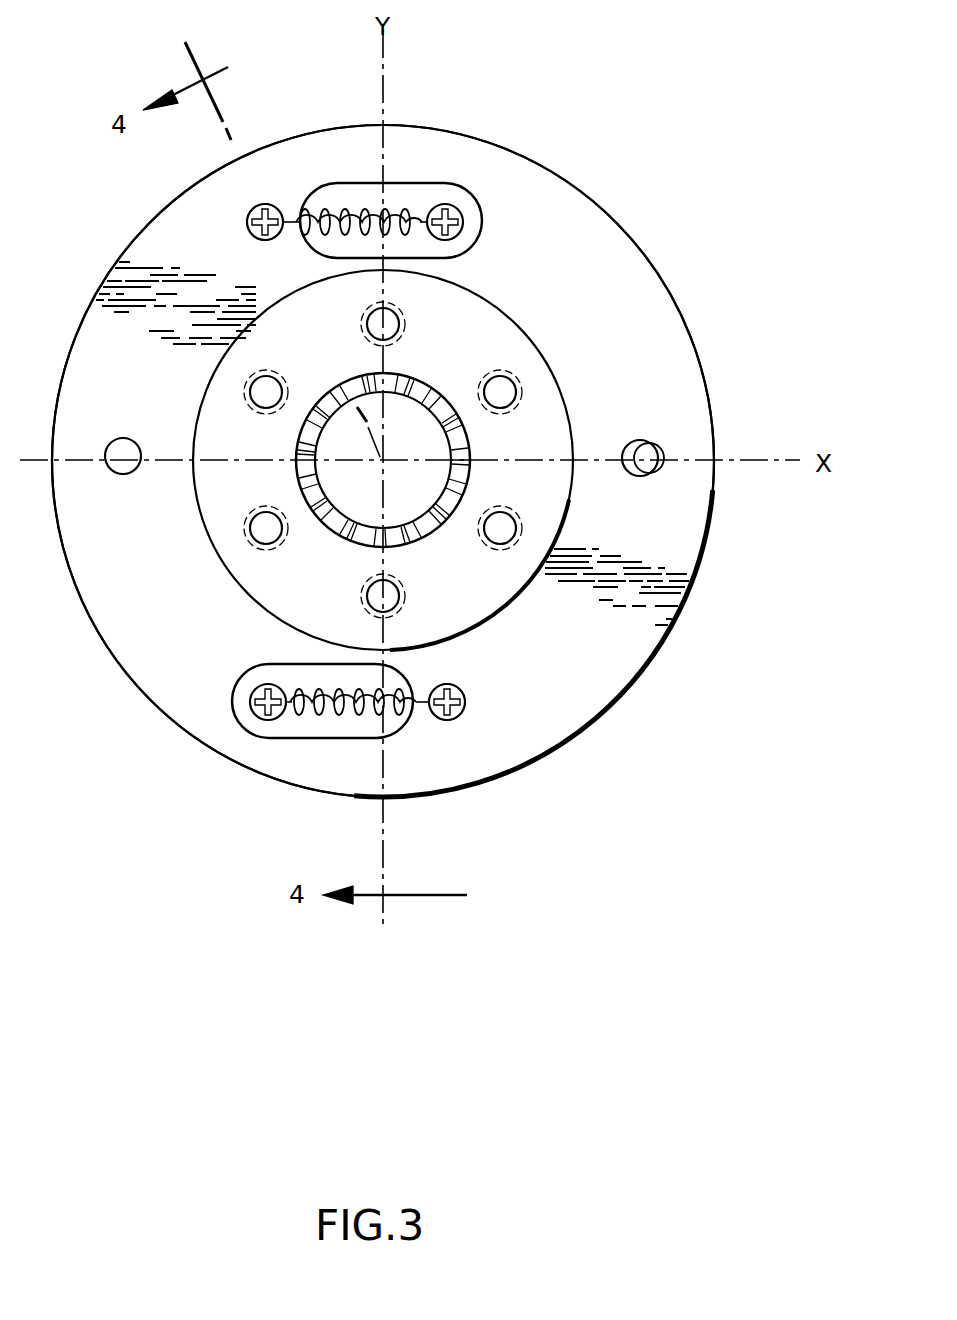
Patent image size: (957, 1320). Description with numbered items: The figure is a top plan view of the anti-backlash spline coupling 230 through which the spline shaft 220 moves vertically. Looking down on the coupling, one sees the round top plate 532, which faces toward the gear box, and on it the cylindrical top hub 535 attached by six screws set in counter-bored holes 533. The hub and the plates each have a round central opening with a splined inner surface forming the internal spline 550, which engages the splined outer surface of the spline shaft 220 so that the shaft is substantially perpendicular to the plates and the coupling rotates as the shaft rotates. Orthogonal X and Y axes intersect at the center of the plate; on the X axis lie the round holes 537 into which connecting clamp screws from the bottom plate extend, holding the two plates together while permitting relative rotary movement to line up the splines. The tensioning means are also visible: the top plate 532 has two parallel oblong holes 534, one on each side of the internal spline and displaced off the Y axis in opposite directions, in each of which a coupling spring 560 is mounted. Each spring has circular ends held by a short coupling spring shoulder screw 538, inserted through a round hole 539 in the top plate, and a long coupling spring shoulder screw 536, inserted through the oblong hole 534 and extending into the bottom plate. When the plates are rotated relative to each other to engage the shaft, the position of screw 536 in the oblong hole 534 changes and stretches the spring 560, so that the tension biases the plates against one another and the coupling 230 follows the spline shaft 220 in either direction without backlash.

The anti-backlash spline coupling 230 is at (705, 140).
The top plate 532 is at (657, 305).
The counter-bored holes 533 is at (258, 385).
The oblong holes 534 is at (376, 190).
The top hub 535 is at (214, 518).
The long coupling spring shoulder screw 536 is at (444, 205).
The round holes 537 is at (117, 473).
The short coupling spring shoulder screw 538 is at (273, 206).
The round holes 539 is at (265, 240).
The internal spline 550 is at (465, 448).
The spline shaft 220 is at (405, 525).
The coupling spring 560 is at (358, 715).